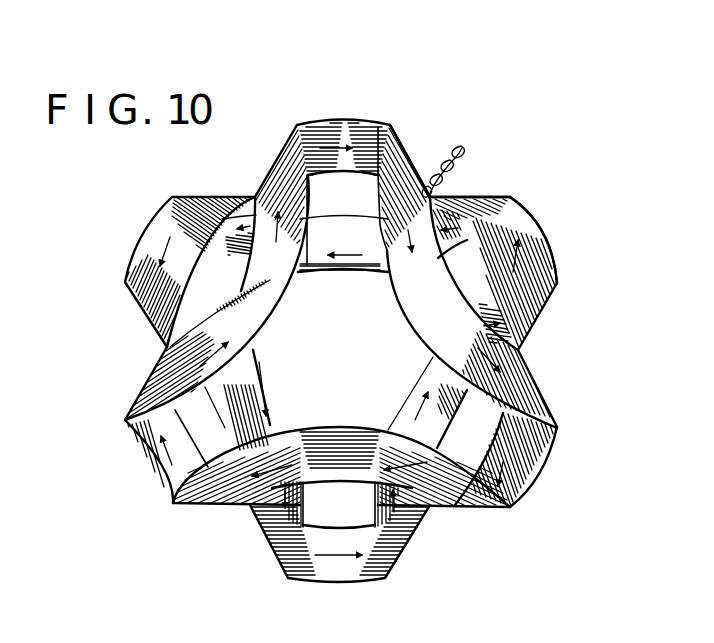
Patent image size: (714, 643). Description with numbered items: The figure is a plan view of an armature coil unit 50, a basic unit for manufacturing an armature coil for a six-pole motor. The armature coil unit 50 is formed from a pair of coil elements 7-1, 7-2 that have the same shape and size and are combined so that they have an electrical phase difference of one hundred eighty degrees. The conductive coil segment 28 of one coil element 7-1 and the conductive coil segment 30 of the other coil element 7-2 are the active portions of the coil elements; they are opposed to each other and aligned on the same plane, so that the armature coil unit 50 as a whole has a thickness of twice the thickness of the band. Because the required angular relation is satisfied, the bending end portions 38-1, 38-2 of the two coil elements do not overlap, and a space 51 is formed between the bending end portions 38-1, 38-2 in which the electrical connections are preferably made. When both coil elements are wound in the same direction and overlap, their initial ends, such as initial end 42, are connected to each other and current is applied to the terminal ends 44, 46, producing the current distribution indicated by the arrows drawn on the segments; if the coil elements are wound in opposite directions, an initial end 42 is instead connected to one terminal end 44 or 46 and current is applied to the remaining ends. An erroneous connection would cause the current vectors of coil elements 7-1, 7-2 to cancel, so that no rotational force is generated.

The armature coil unit 50 is at (385, 107).
The terminal end 44 is at (393, 126).
The conductive coil segment 30 is at (333, 135).
The bending end portion 38-1 is at (402, 183).
The space 51 is at (462, 148).
The initial end 42 is at (456, 171).
The bending end portion 38-2 is at (492, 197).
The terminal end 46 is at (512, 198).
The coil element 7-2 is at (522, 220).
The coil element 7-1 is at (273, 178).
The conductive coil segment 28 is at (402, 293).